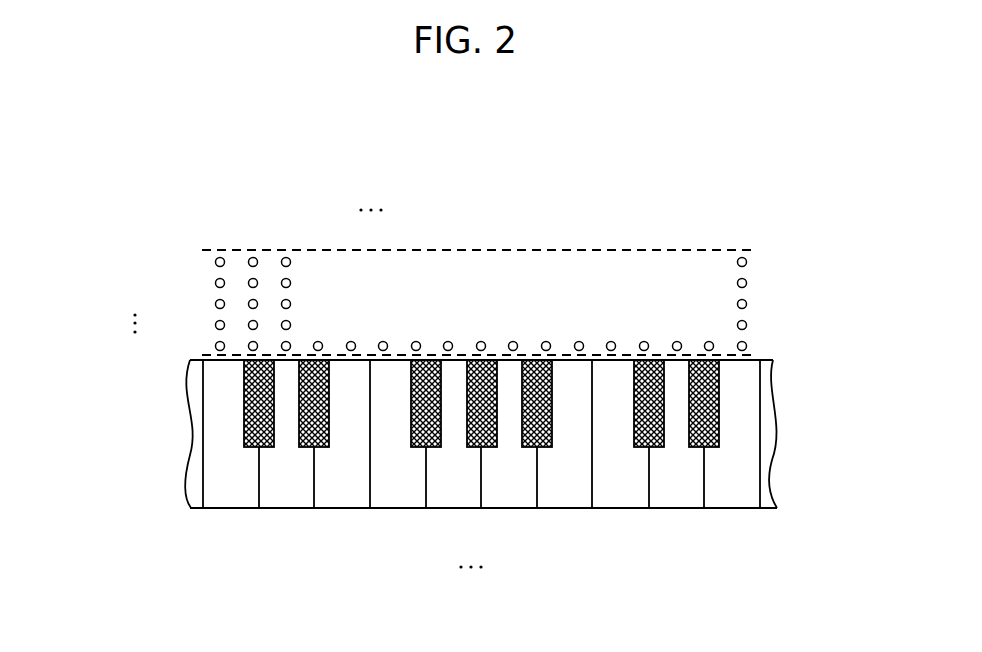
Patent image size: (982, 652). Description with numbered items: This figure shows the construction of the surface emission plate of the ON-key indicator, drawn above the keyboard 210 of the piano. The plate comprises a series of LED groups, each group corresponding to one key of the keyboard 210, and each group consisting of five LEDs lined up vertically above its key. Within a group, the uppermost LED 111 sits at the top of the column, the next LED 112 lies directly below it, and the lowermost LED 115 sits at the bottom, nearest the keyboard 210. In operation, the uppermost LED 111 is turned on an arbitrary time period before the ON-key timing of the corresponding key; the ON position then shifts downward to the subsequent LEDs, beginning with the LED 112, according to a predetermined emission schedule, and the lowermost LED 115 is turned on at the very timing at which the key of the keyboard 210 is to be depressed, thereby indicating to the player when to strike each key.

The uppermost LED 111 is at (216, 263).
The LED 112 is at (216, 283).
The lowermost LED 115 is at (216, 347).
The keyboard 210 is at (751, 404).